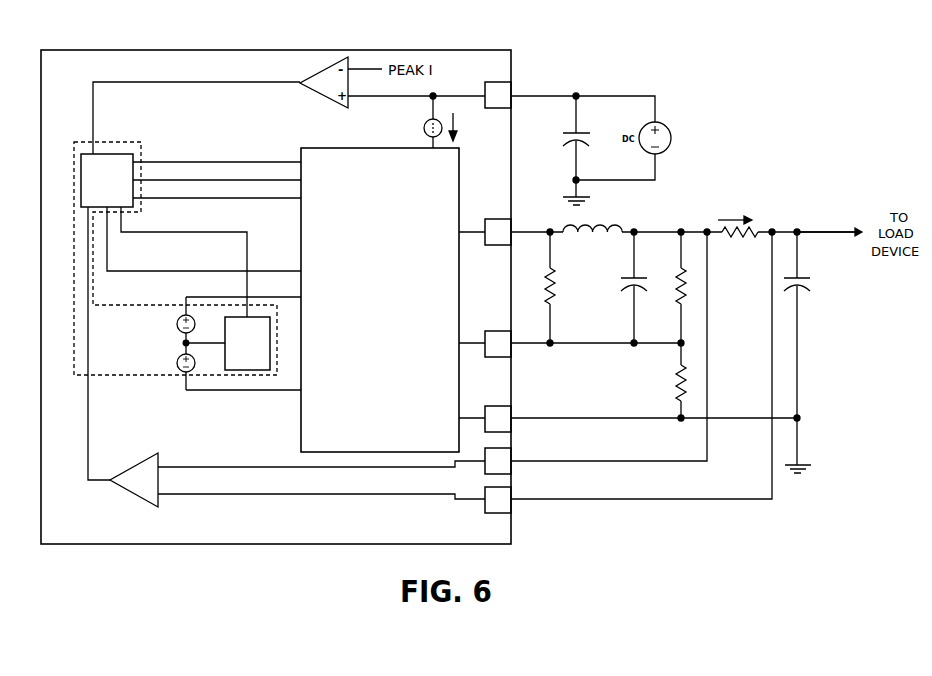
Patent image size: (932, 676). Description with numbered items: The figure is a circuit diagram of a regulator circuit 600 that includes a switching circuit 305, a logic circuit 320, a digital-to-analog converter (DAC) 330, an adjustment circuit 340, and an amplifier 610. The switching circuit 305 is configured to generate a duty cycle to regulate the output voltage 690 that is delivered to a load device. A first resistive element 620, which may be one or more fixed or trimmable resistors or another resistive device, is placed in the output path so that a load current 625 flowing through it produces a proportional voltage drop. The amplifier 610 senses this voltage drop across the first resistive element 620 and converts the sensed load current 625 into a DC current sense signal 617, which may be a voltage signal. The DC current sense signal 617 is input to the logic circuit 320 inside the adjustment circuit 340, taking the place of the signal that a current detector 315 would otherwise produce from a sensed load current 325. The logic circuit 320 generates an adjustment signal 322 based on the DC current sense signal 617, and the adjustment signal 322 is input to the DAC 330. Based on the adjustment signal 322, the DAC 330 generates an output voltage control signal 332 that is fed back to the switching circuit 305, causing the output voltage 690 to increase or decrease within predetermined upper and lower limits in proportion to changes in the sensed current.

The regulator circuit 600 is at (185, 50).
The switching circuit 305 is at (380, 300).
The current detector 315 is at (429, 125).
The logic circuit 320 is at (107, 180).
The adjustment signal 322 is at (215, 232).
The load current 325 is at (458, 127).
The digital-to-analog converter (DAC) 330 is at (247, 343).
The output voltage control signal 332 is at (185, 342).
The adjustment circuit 340 is at (107, 375).
The amplifier 610 is at (134, 480).
The DC current sense signal 617 is at (88, 450).
The first resistive element 620 is at (750, 238).
The load current 625 is at (732, 215).
The output voltage 690 is at (823, 232).